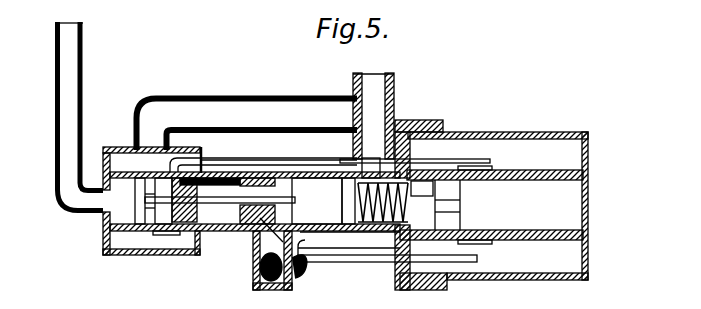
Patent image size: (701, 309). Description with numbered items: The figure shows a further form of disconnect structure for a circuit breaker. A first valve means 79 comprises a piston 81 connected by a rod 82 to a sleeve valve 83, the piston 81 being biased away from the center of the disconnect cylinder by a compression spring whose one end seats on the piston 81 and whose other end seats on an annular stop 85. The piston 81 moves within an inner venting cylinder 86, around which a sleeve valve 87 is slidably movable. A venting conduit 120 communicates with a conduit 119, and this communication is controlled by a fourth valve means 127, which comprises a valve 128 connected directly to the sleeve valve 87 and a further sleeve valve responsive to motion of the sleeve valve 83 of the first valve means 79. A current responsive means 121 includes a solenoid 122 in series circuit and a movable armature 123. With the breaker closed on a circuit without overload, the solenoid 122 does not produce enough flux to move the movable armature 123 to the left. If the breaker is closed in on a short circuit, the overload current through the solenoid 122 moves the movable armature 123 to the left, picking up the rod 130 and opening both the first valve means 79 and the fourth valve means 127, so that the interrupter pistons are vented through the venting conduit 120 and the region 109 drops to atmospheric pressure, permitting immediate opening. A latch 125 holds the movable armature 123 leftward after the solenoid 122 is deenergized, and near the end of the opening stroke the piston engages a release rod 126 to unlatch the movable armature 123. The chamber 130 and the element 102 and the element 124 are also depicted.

The first valve means 79 is at (347, 154).
The piston 81 is at (342, 212).
The rod 82 is at (376, 223).
The sleeve valve 83 is at (455, 226).
The annular stop 85 is at (422, 189).
The inner venting cylinder 86 is at (546, 182).
The sleeve valve 87 is at (525, 171).
The upper cylinder chamber 102 is at (566, 222).
The region 109 is at (557, 269).
The conduit 119 is at (393, 100).
The venting conduit 120 is at (84, 69).
The current responsive means 121 is at (237, 249).
The solenoid 122 is at (225, 171).
The movable armature 123 is at (272, 172).
The piston valve 124 is at (140, 186).
The latch 125 is at (253, 243).
The release rod 126 is at (477, 259).
The fourth valve means 127 is at (153, 170).
The valve 128 is at (247, 125).
The rod 130 is at (317, 201).